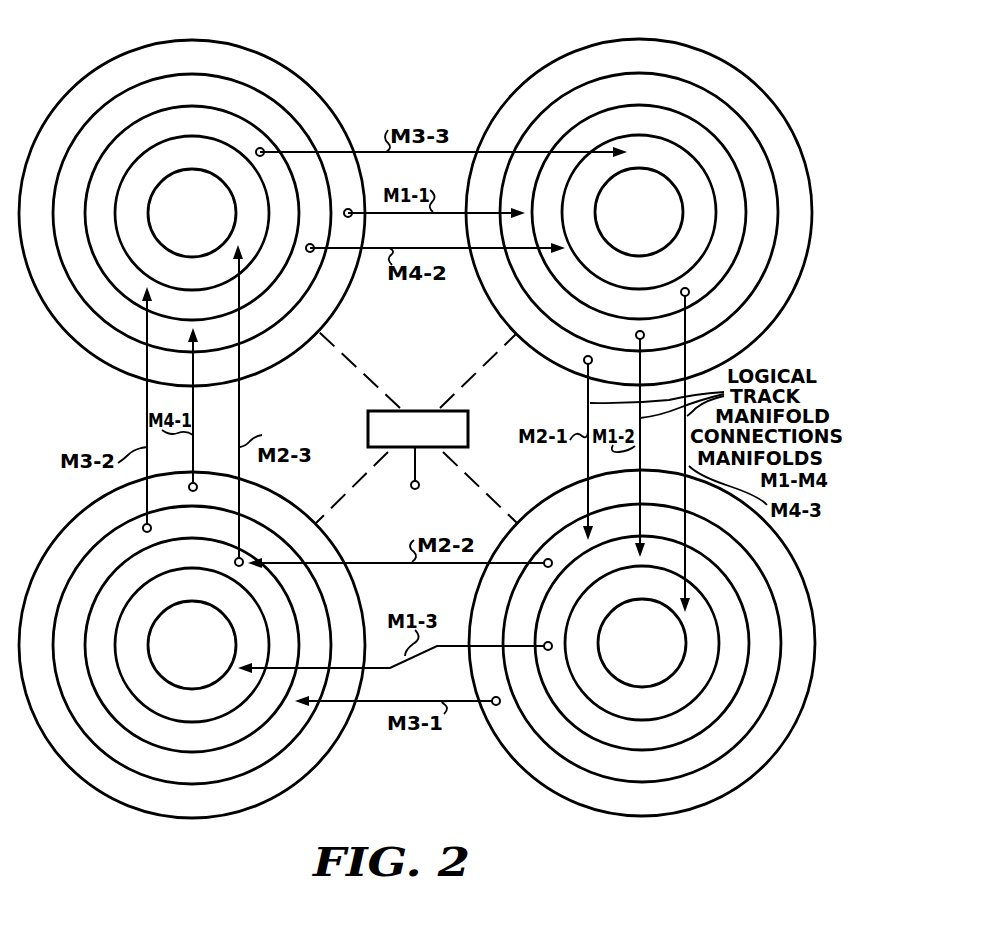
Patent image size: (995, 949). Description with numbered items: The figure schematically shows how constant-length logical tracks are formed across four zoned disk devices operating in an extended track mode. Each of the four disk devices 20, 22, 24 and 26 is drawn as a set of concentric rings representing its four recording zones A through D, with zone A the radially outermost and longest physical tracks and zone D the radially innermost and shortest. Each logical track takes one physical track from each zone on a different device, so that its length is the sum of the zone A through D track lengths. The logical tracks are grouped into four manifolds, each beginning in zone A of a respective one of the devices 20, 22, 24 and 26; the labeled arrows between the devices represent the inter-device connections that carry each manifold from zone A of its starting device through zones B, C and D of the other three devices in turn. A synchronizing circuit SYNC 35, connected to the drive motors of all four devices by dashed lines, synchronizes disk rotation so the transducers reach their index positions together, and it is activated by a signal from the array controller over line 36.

The disk device DVE1 20 is at (72, 93).
The disk device DVE2 22 is at (771, 93).
The disk device DVE3 24 is at (791, 558).
The disk device DVE4 26 is at (62, 526).
The synchronizing circuit means SYNC 35 is at (444, 378).
The line 36 is at (410, 470).